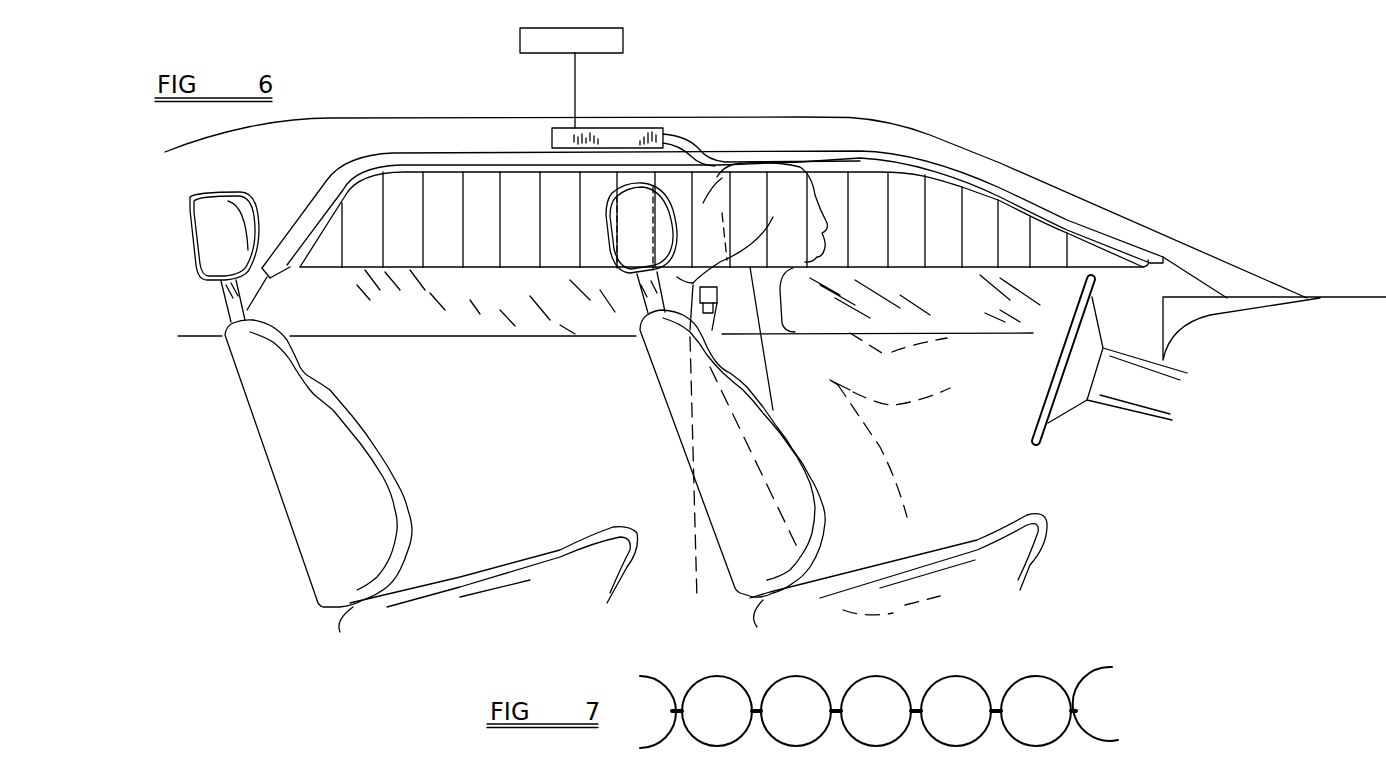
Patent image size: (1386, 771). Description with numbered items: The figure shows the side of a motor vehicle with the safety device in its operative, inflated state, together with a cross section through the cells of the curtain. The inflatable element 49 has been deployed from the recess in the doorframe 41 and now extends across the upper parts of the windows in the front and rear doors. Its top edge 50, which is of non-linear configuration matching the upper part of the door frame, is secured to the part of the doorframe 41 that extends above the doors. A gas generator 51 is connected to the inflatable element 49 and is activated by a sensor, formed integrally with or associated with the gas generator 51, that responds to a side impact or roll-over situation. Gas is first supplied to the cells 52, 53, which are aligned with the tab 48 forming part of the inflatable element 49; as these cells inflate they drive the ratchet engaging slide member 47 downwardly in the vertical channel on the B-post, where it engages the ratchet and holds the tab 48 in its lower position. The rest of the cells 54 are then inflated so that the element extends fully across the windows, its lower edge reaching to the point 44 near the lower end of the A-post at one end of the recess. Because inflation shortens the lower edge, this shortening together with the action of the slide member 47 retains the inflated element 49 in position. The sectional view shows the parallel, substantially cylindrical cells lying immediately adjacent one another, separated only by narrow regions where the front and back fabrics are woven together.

The doorframe 41 is at (990, 148).
The point near lower end of A-post 44 is at (1163, 262).
The ratchet engaging slide member 47 is at (706, 314).
The tab 48 is at (773, 217).
The inflatable element 49 is at (905, 195).
The top edge 50 is at (863, 178).
The gas generator 51 is at (617, 136).
The cell 52 is at (673, 190).
The cell 53 is at (728, 172).
The rest of the cells 54 is at (522, 195).